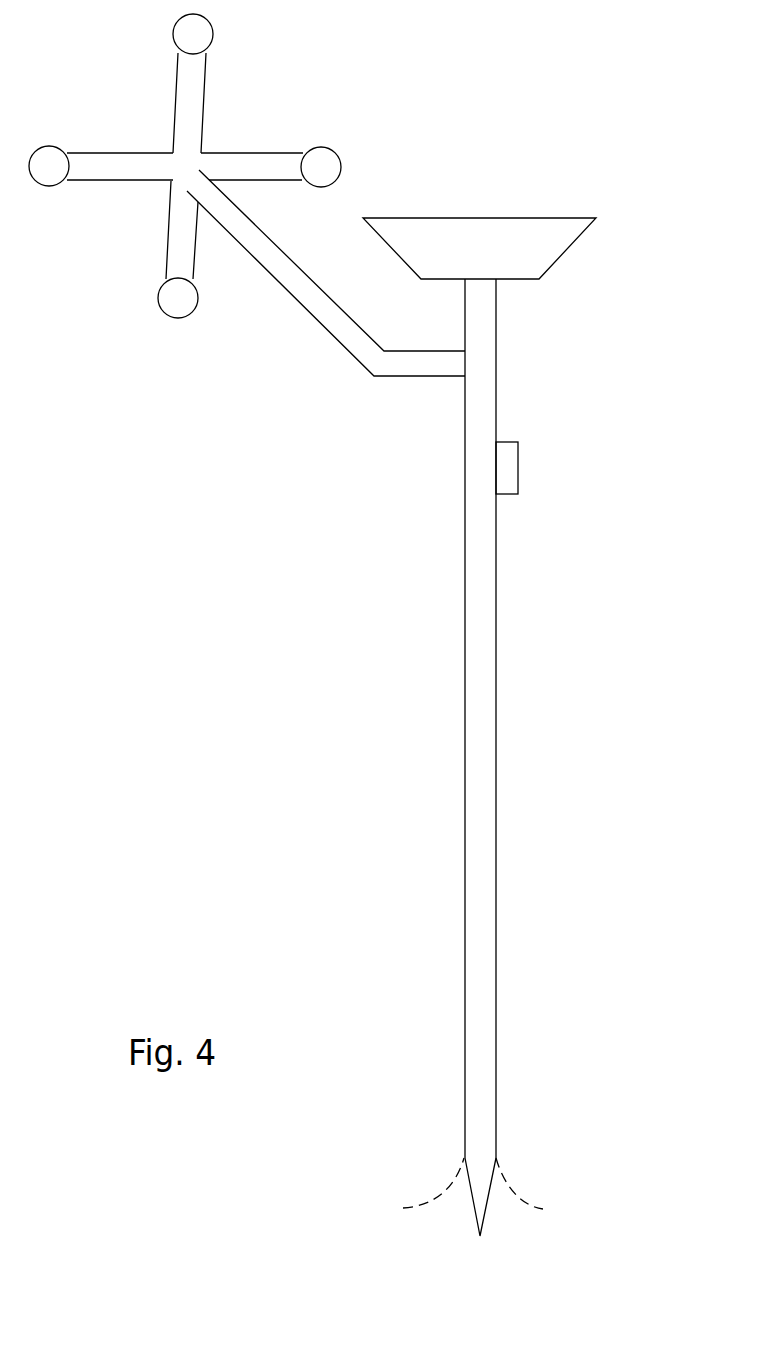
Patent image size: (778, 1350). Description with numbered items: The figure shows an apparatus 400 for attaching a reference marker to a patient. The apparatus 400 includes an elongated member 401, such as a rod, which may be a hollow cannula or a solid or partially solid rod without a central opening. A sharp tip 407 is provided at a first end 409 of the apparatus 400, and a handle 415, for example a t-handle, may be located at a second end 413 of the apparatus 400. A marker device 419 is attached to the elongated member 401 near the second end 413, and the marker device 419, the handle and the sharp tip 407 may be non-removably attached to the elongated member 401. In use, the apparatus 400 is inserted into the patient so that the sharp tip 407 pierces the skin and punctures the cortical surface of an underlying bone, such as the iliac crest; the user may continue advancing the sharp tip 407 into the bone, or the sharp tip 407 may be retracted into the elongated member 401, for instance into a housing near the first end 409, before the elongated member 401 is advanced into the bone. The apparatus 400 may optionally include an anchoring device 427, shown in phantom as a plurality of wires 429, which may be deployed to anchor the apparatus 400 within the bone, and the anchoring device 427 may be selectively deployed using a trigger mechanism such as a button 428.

The apparatus 400 is at (584, 120).
The elongated member 401 is at (495, 647).
The sharp tip 407 is at (479, 1236).
The first end 409 is at (479, 1253).
The second end 413 is at (481, 181).
The handle 415 is at (567, 248).
The marker device 419 is at (277, 121).
The anchoring device 427 is at (543, 1177).
The button 428 is at (517, 462).
The wires 429 is at (422, 1207).